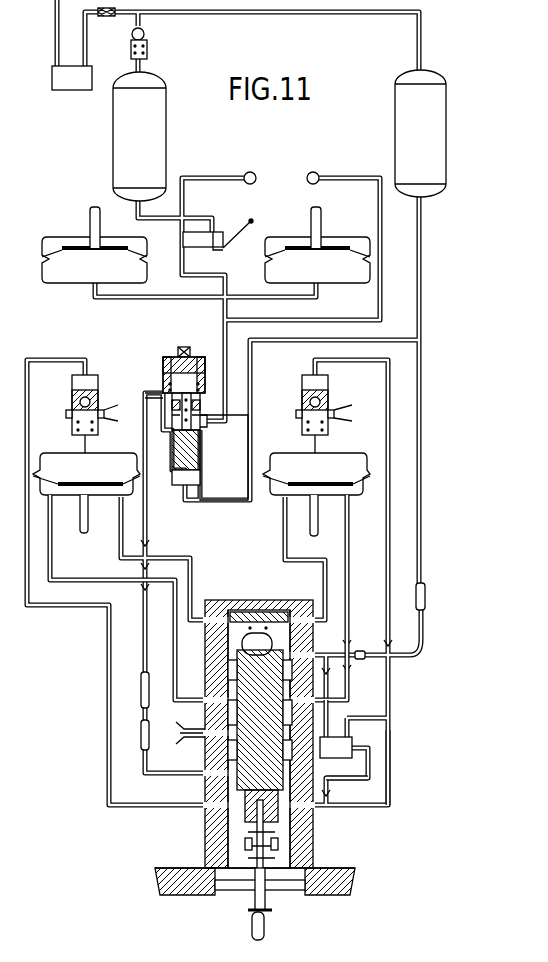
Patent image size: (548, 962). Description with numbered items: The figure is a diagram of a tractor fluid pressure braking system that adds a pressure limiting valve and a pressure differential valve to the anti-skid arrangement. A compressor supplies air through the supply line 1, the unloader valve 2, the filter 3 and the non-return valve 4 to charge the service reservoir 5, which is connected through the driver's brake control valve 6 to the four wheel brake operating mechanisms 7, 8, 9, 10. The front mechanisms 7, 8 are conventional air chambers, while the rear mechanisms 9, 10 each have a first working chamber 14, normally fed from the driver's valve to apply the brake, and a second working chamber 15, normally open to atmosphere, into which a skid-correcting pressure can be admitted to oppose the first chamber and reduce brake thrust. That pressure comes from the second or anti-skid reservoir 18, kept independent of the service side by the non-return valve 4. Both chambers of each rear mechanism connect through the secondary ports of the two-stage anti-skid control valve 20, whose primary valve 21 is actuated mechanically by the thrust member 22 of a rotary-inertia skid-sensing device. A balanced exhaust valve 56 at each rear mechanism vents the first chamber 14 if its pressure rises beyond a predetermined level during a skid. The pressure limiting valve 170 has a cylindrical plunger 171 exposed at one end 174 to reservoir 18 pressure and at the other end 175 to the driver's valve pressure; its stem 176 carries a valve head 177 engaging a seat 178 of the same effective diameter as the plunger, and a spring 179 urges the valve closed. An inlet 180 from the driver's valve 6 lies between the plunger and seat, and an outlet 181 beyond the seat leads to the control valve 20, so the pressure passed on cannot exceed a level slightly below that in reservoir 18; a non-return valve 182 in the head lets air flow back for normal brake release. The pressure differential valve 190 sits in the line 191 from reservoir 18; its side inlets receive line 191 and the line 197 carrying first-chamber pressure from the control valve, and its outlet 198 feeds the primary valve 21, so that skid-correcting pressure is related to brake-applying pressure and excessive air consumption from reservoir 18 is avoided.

The supply line 1 is at (58, 31).
The unloader valve 2 is at (78, 88).
The filter 3 is at (108, 16).
The non-return valve 4 is at (149, 42).
The compressed air service reservoir 5 is at (139, 136).
The driver's brake control valve 6 is at (183, 240).
The front wheel brake operating mechanism 7 is at (72, 268).
The front wheel brake operating mechanism 8 is at (335, 268).
The rear wheel brake operating mechanism 9 is at (63, 503).
The rear wheel brake operating mechanism 10 is at (356, 496).
The first working chamber 14 is at (52, 464).
The second working chamber 15 is at (98, 500).
The second or anti-skid reservoir 18 is at (420, 133).
The two-stage anti-skid control valve 20 is at (318, 826).
The primary valve 21 is at (285, 858).
The thrust member 22 is at (266, 920).
The balanced exhaust valve 56 is at (72, 400).
The pressure limiting valve 170 is at (203, 450).
The cylindrical plunger 171 is at (178, 470).
The plunger end 174 is at (190, 485).
The plunger end 175 is at (181, 350).
The stem 176 is at (150, 436).
The valve head 177 is at (200, 413).
The seat 178 is at (205, 420).
The spring 179 is at (165, 383).
The inlet 180 is at (212, 430).
The outlet 181 is at (148, 395).
The non-return valve 182 is at (197, 398).
The pressure differential valve 190 is at (355, 739).
The line 191 is at (332, 720).
The line 197 is at (390, 756).
The outlet 198 is at (355, 785).